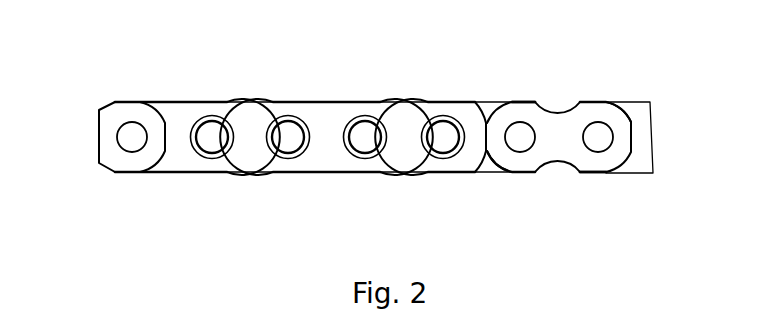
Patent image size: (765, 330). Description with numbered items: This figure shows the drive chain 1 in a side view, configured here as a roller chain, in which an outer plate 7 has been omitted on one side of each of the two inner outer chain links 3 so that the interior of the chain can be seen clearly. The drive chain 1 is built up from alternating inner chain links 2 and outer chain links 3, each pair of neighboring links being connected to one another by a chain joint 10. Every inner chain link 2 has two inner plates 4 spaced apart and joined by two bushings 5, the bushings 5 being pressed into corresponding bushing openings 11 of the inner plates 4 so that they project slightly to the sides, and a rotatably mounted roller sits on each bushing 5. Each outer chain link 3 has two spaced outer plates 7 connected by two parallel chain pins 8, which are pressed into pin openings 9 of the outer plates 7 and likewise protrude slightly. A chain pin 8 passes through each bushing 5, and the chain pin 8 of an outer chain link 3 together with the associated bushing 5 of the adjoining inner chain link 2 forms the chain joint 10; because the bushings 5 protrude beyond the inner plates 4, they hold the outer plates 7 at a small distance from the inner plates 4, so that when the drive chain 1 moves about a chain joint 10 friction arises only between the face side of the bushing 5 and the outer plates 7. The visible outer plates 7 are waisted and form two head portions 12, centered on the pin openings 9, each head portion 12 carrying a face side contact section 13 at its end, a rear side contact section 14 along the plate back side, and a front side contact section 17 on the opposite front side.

The drive chain 1 is at (80, 83).
The inner chain link 2 is at (325, 184).
The outer chain link 3 is at (548, 184).
The inner plate 4 is at (329, 103).
The bushing 5 is at (212, 158).
The outer plate 7 is at (105, 139).
The chain pin 8 is at (601, 138).
The pin opening 9 is at (139, 146).
The chain joint 10 is at (615, 112).
The bushing opening 11 is at (298, 134).
The head portion 12 is at (500, 153).
The face side contact section 13 is at (167, 124).
The rear side contact section 14 is at (522, 101).
The front side contact section 17 is at (599, 174).